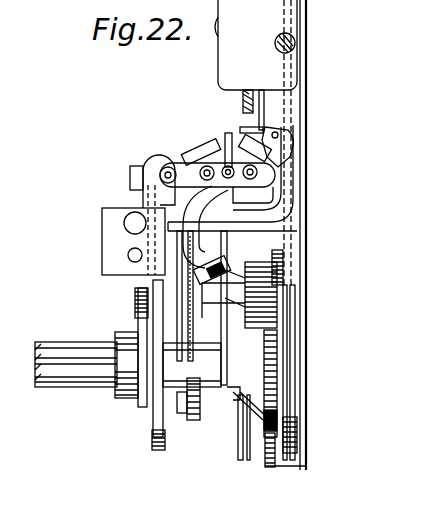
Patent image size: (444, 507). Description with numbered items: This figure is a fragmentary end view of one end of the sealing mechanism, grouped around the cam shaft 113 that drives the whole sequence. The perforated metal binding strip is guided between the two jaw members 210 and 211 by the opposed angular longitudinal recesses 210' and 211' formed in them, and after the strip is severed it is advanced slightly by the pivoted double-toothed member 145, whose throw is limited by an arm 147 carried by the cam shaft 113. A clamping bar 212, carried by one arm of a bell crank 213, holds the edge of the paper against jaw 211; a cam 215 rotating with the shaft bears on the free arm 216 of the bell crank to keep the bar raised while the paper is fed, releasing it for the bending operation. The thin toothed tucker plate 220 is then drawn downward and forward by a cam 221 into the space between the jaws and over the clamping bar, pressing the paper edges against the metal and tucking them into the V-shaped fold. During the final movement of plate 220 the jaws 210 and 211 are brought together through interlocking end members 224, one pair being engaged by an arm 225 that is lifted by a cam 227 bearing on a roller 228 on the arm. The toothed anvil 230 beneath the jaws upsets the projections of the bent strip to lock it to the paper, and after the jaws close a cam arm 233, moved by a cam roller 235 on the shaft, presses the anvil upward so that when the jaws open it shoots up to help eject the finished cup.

The cam shaft 113 is at (80, 384).
The double-toothed member 145 is at (216, 244).
The arm 147 is at (193, 419).
The jaw member 210 is at (211, 157).
The angular longitudinal recess 210' is at (195, 134).
The jaw member 211 is at (294, 150).
The angular longitudinal recess 211' is at (239, 132).
The clamping bar 212 is at (262, 130).
The bell crank 213 is at (293, 196).
The cam 215 is at (232, 305).
The free arm 216 is at (283, 256).
The toothed plate 220 is at (243, 100).
The cam 221 is at (272, 380).
The interlocking end members 224 is at (262, 182).
The arm 225 is at (150, 168).
The cam 227 is at (140, 406).
The roller 228 is at (136, 301).
The anvil 230 is at (230, 200).
The cam arm 233 is at (275, 463).
The cam roller 235 is at (277, 417).